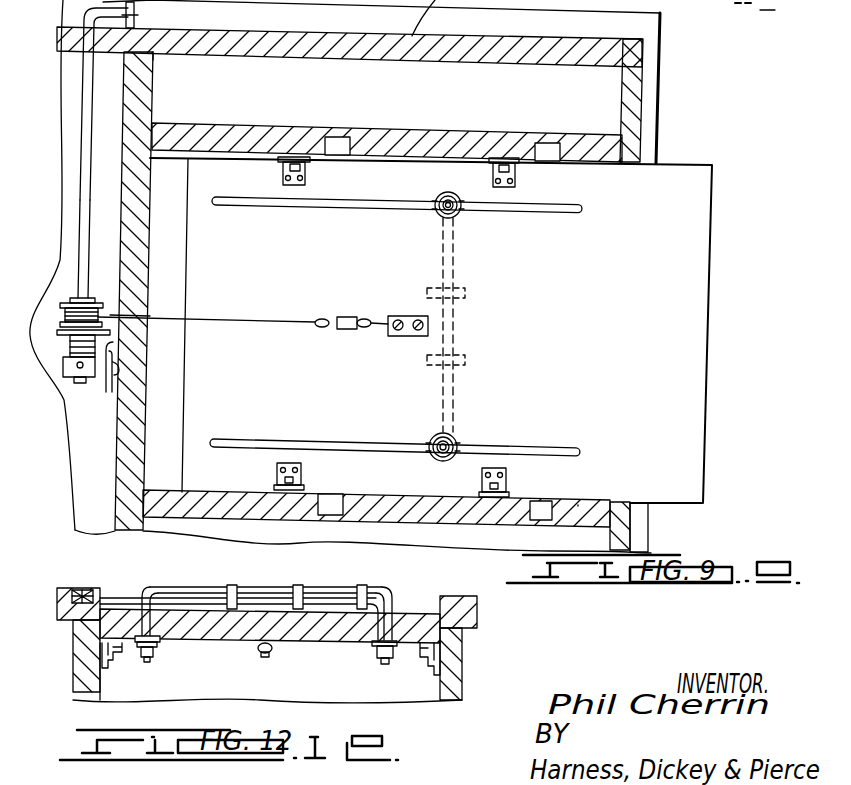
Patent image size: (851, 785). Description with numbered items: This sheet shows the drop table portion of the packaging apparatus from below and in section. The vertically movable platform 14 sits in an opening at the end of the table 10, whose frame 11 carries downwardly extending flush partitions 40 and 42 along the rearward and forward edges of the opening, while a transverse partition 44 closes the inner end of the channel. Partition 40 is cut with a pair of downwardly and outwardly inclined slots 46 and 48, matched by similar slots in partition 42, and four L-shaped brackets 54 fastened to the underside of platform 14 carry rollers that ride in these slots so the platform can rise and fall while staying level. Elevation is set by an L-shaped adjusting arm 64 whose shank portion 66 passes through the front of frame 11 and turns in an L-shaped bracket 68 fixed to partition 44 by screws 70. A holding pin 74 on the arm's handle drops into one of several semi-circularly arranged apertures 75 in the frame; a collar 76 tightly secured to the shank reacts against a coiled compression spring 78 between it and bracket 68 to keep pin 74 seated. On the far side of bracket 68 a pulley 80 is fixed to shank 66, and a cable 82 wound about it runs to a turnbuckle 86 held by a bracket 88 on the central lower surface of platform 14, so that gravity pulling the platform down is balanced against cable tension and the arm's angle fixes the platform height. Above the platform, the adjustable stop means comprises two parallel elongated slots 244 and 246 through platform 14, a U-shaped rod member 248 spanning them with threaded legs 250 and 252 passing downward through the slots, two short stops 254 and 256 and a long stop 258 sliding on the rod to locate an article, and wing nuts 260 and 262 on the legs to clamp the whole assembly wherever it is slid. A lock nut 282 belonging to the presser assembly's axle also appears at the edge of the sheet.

In FIG. 9, the table 10 is at (660, 106).
In FIG. 12, the table 10 is at (477, 610).
In FIG. 9, the frame 11 is at (632, 80).
In FIG. 9, the platform 14 is at (683, 321).
In FIG. 12, the platform 14 is at (246, 701).
In FIG. 9, the partition 40 is at (578, 505).
In FIG. 12, the partition 40 is at (456, 656).
In FIG. 9, the partition 42 is at (550, 141).
In FIG. 12, the partition 42 is at (78, 660).
In FIG. 9, the transverse partition 44 is at (149, 238).
In FIG. 12, the transverse partition 44 is at (247, 684).
In FIG. 9, the inclined slot 46 is at (330, 508).
In FIG. 9, the inclined slot 48 is at (530, 508).
In FIG. 9, the L-shaped bracket 54 is at (310, 176).
In FIG. 9, the adjusting arm 64 is at (83, 88).
In FIG. 9, the shank portion 66 is at (80, 201).
In FIG. 9, the L-shaped bracket 68 is at (74, 338).
In FIG. 9, the screws 70 is at (105, 372).
In FIG. 9, the holding pin 74 is at (136, 20).
In FIG. 9, the apertures 75 is at (150, 60).
In FIG. 9, the collar 76 is at (70, 382).
In FIG. 9, the coiled compression spring 78 is at (73, 368).
In FIG. 9, the pulley 80 is at (98, 302).
In FIG. 9, the cable 82 is at (214, 319).
In FIG. 9, the turnbuckle 86 is at (350, 317).
In FIG. 9, the bracket 88 is at (405, 336).
In FIG. 9, the elongated slot 244 is at (347, 206).
In FIG. 12, the elongated slot 244 is at (140, 611).
In FIG. 9, the elongated slot 246 is at (267, 438).
In FIG. 12, the elongated slot 246 is at (392, 612).
In FIG. 12, the U-shaped rod member 248 is at (152, 590).
In FIG. 12, the threaded leg 250 is at (150, 623).
In FIG. 12, the threaded leg 252 is at (371, 646).
In FIG. 12, the stop 254 is at (228, 589).
In FIG. 12, the stop 256 is at (296, 587).
In FIG. 12, the stop 258 is at (380, 572).
In FIG. 9, the wing nut 260 is at (458, 213).
In FIG. 12, the wing nut 260 is at (140, 647).
In FIG. 9, the wing nut 262 is at (466, 440).
In FIG. 12, the wing nut 262 is at (378, 666).
In FIG. 9, the lock nut 282 is at (795, 9).